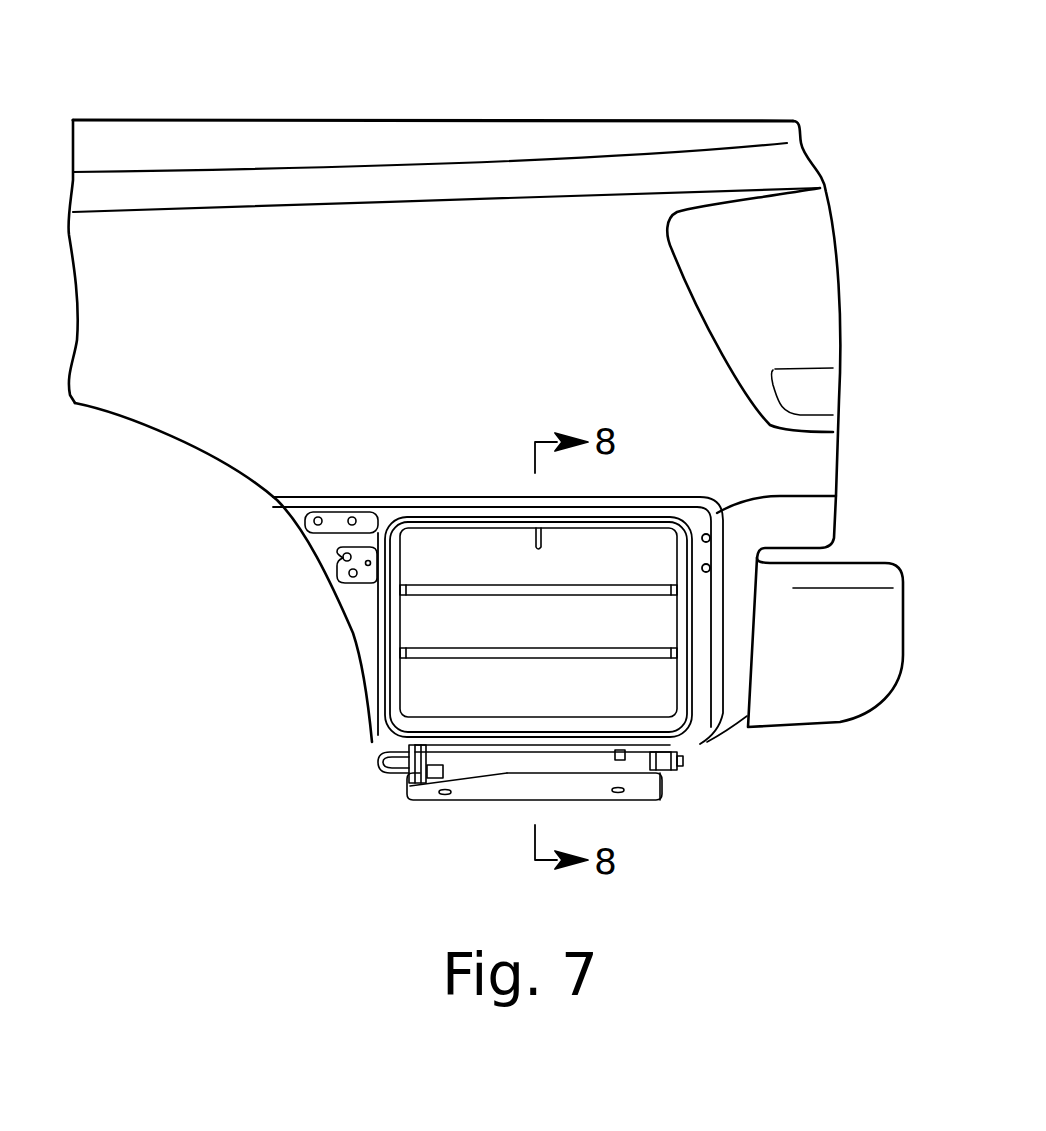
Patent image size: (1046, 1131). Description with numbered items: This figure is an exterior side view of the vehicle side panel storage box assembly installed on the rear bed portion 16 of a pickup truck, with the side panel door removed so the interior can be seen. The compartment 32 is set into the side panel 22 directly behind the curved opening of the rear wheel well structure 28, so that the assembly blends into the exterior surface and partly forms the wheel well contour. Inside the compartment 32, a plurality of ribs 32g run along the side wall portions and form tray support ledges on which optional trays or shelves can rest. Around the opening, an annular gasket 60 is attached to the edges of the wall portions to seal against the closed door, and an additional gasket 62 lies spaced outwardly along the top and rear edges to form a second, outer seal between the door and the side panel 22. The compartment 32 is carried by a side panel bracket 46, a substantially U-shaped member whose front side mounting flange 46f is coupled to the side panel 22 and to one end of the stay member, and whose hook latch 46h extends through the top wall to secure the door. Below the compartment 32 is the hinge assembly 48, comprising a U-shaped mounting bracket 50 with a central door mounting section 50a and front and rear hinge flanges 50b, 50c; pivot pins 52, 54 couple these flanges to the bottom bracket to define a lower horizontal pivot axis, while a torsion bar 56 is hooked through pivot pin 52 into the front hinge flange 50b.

The rear bed portion 16 is at (343, 96).
The side panel 22 is at (140, 260).
The rear wheel well structure 28 is at (143, 423).
The compartment 32 is at (365, 604).
The ribs 32g is at (465, 647).
The side panel bracket 46 is at (343, 645).
The front side mounting flange 46f is at (327, 542).
The hook latch 46h is at (534, 543).
The hinge assembly 48 is at (390, 789).
The mounting bracket 50 is at (499, 806).
The door mounting section 50a is at (583, 792).
The front hinge flange 50b is at (383, 770).
The rear hinge flange 50c is at (700, 793).
The pivot pin 52 is at (387, 755).
The pivot pin 54 is at (700, 757).
The torsion bar 56 is at (452, 790).
The annular gasket 60 is at (627, 523).
The additional gasket 62 is at (834, 497).